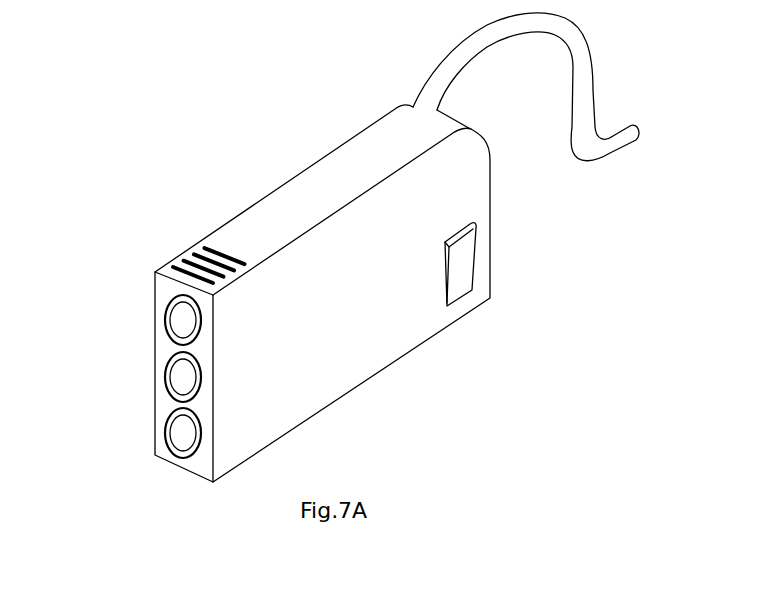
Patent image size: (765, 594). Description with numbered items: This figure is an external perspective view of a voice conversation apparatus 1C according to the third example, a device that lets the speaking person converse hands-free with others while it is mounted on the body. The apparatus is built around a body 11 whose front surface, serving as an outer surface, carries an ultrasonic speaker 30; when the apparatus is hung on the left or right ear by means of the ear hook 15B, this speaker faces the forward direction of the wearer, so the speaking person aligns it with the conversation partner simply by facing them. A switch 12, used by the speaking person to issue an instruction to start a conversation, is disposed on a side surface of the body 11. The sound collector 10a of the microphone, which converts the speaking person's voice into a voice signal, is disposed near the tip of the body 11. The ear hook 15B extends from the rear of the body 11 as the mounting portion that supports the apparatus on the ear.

The voice conversation apparatus 1C is at (205, 104).
The sound collector 10a is at (190, 258).
The body 11 is at (332, 343).
The switch 12 is at (462, 268).
The ear hook 15B is at (473, 48).
The ultrasonic speaker 30 is at (162, 384).